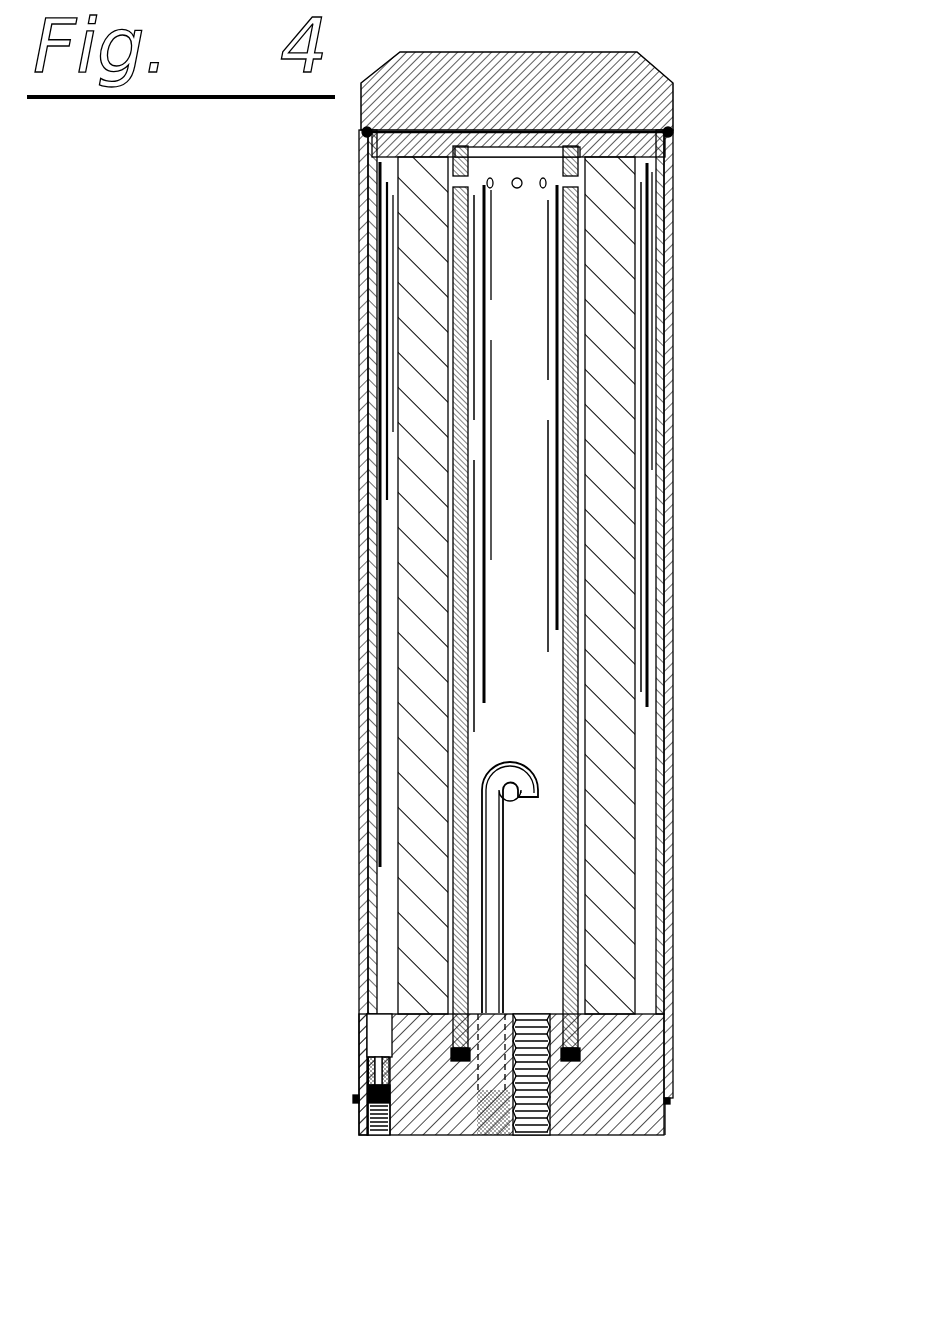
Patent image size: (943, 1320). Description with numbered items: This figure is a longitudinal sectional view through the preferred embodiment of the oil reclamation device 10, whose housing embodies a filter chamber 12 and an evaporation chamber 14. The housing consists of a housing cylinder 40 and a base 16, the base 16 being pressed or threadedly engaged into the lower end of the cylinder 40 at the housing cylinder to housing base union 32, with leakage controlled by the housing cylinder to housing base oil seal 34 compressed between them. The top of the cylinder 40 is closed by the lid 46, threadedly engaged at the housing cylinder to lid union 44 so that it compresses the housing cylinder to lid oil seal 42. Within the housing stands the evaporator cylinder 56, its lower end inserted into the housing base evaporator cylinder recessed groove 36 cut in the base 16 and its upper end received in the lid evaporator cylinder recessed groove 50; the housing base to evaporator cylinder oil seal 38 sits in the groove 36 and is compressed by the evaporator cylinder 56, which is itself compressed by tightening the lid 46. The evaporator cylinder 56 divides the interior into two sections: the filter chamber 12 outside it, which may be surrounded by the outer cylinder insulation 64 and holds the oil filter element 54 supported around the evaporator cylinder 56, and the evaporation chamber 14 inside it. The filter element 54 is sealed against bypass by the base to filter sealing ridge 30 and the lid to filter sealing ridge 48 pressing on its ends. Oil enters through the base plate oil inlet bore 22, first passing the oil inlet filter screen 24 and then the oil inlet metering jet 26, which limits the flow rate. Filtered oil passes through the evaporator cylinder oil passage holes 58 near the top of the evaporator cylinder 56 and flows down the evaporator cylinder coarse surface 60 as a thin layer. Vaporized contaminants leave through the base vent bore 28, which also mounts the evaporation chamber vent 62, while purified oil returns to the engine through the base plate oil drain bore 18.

The oil reclamation device 10 is at (300, 505).
The housing filter chamber 12 is at (640, 878).
The housing evaporation chamber 14 is at (538, 950).
The housing base 16 is at (628, 1047).
The base plate oil drain bore 18 is at (532, 1118).
The base plate oil inlet bore 22 is at (373, 1133).
The oil inlet filter screen 24 is at (370, 1108).
The oil inlet metering jet 26 is at (360, 1012).
The base vent bore 28 is at (490, 1128).
The base to filter sealing ridge 30 is at (432, 1010).
The housing cylinder to housing base union 32 is at (372, 1072).
The housing cylinder to housing base oil seal 34 is at (372, 1092).
The housing base evaporator cylinder recessed groove 36 is at (393, 1030).
The housing base to evaporator cylinder oil seal 38 is at (452, 1050).
The housing cylinder 40 is at (360, 815).
The housing cylinder to lid oil seal 42 is at (363, 145).
The housing cylinder to lid union 44 is at (365, 190).
The lid 46 is at (382, 87).
The lid to filter sealing ridge 48 is at (452, 153).
The lid evaporator cylinder recessed groove 50 is at (437, 157).
The oil filter element 54 is at (608, 175).
The evaporator cylinder 56 is at (577, 228).
The evaporator cylinder oil passage holes 58 is at (522, 183).
The evaporator cylinder coarse surface 60 is at (560, 258).
The evaporation chamber vent 62 is at (517, 768).
The outer cylinder insulation 64 is at (668, 805).